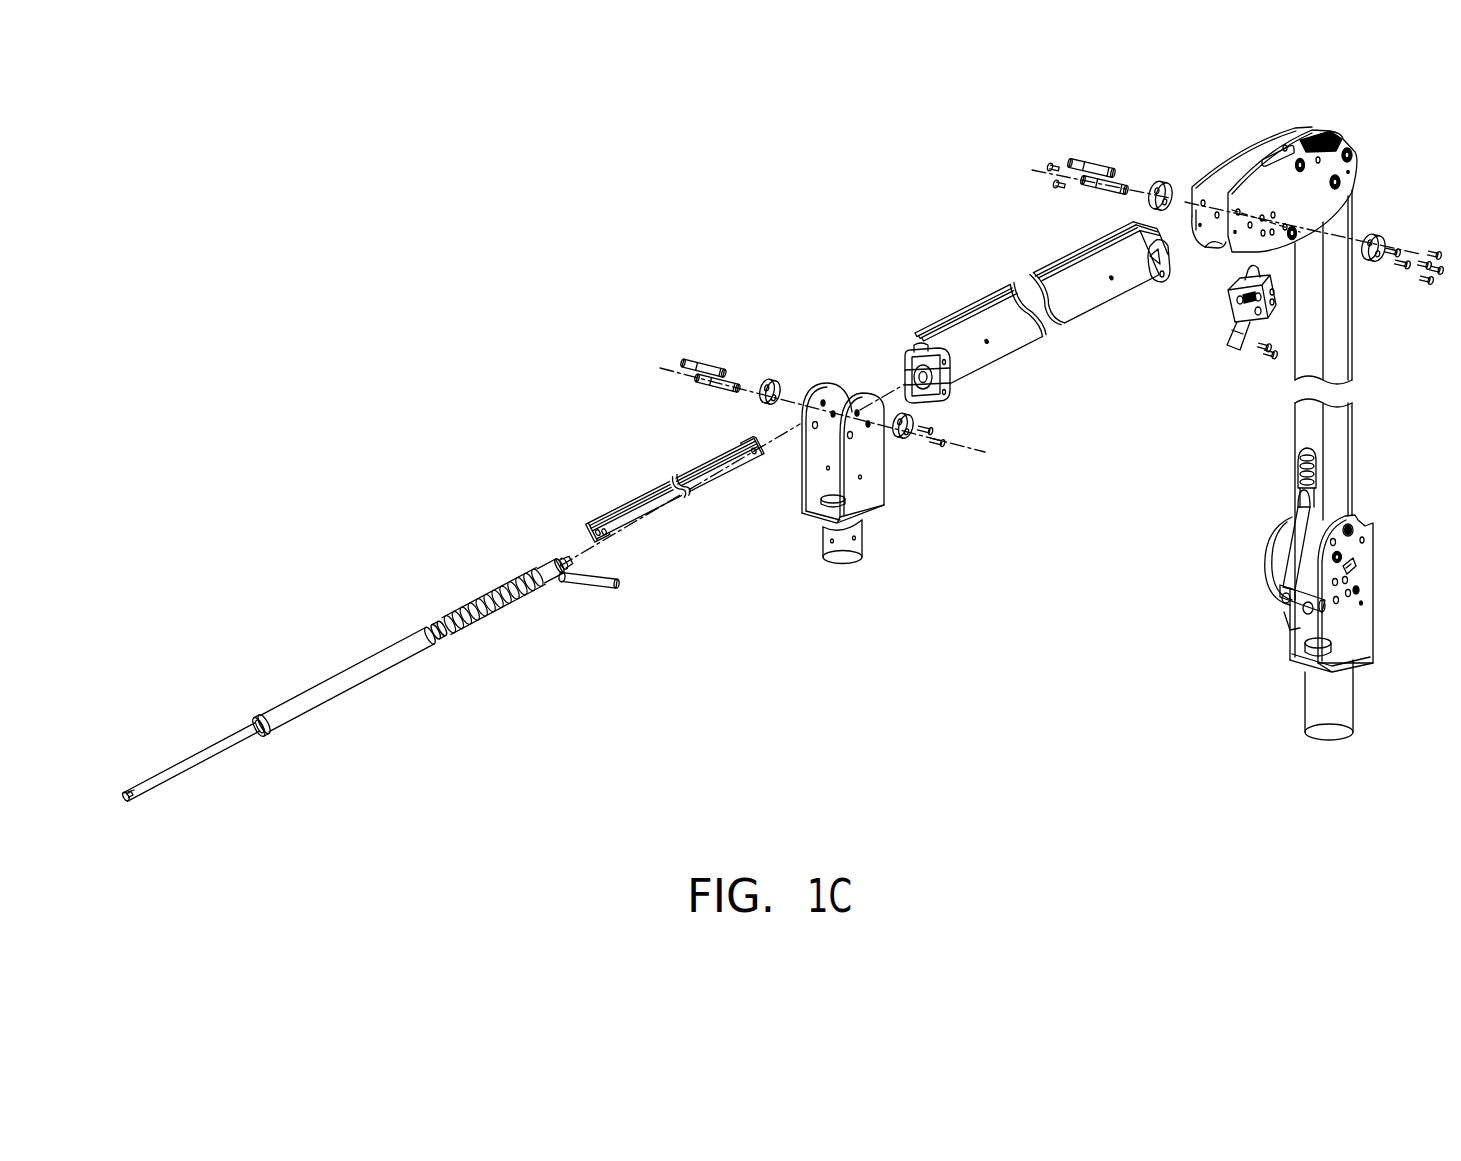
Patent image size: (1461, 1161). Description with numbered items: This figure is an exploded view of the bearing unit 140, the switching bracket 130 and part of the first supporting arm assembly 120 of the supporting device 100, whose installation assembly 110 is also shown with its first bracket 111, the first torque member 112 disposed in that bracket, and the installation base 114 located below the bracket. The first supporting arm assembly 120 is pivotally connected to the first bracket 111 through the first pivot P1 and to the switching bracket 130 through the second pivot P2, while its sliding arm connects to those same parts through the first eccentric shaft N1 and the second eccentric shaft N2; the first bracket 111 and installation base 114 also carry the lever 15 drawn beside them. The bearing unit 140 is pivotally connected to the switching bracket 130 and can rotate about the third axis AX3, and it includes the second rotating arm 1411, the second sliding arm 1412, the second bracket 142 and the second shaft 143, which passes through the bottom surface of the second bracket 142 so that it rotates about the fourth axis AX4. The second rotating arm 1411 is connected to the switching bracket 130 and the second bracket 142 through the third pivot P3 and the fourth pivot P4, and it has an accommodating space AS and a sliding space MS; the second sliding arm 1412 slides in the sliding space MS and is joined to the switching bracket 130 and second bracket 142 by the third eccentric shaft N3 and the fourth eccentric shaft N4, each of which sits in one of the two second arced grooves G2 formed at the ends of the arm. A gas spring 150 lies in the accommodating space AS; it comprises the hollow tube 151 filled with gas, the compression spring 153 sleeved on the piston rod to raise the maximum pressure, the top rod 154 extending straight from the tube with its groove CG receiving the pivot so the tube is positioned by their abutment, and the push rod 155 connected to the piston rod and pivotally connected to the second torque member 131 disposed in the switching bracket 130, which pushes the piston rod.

The supporting device 100 is at (1460, 865).
The installation assembly 110 is at (1325, 684).
The first bracket 111 is at (1362, 637).
The first torque member 112 is at (1295, 602).
The installation base 114 is at (1329, 721).
The first supporting arm assembly 120 is at (1336, 352).
The switching bracket 130 is at (1286, 194).
The second torque member 131 is at (1226, 293).
The bearing unit 140 is at (830, 340).
The second rotating arm 1411 is at (1010, 341).
The second sliding arm 1412 is at (661, 518).
The second bracket 142 is at (872, 498).
The second shaft 143 is at (840, 566).
The gas spring 150 is at (355, 651).
The hollow tube 151 is at (356, 680).
The compression spring 153 is at (496, 602).
The top rod 154 is at (186, 756).
The push rod 155 is at (589, 586).
The lever 15 is at (1300, 568).
The groove CG is at (122, 800).
The sliding space MS is at (914, 345).
The second arced groove G2 is at (958, 368).
The accommodating space AS is at (937, 400).
The third axis AX3 is at (1034, 180).
The fourth axis AX4 is at (662, 370).
The first eccentric shaft N1 is at (1364, 520).
The second eccentric shaft N2 is at (1353, 155).
The third eccentric shaft N3 is at (1086, 172).
The fourth eccentric shaft N4 is at (708, 362).
The first pivot P1 is at (1343, 556).
The second pivot P2 is at (1342, 182).
The third pivot P3 is at (1108, 190).
The fourth pivot P4 is at (720, 386).